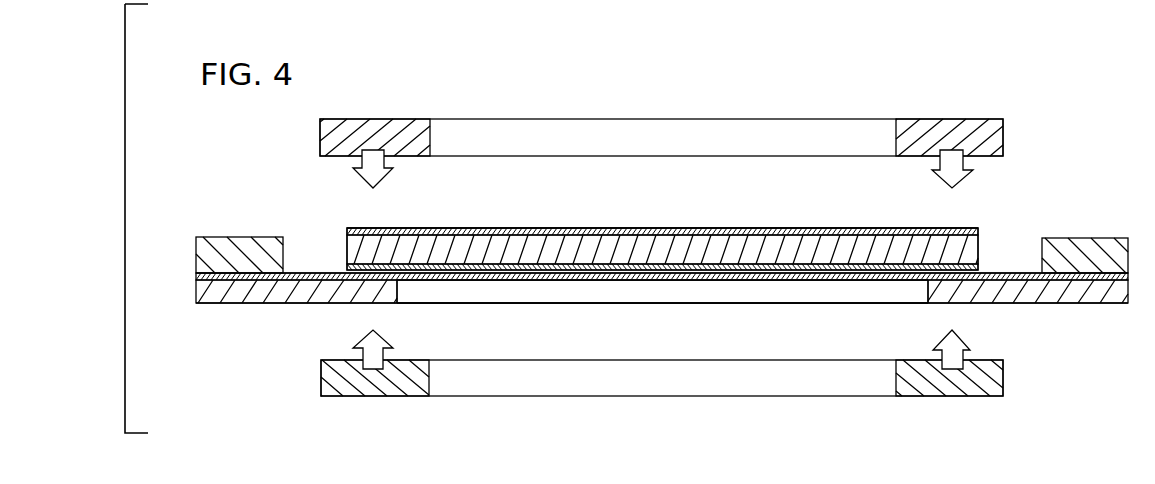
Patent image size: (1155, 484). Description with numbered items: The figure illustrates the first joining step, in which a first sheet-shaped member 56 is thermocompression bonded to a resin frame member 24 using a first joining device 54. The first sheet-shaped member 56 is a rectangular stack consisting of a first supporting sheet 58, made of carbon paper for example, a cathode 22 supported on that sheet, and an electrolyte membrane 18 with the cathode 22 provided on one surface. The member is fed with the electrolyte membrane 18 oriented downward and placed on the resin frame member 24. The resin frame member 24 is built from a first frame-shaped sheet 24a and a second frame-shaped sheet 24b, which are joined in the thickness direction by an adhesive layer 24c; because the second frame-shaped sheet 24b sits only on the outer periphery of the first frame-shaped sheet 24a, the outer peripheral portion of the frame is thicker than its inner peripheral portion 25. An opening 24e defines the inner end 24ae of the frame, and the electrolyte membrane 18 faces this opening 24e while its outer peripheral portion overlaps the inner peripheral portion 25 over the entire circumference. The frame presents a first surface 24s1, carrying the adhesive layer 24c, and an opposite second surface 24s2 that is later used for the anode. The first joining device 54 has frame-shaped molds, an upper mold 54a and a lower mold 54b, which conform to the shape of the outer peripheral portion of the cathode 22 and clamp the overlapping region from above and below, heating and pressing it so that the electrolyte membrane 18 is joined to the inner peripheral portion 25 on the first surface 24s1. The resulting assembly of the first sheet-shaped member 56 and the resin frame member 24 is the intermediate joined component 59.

The first joining device 54 is at (692, 132).
The upper mold 54a is at (943, 128).
The lower mold 54b is at (920, 387).
The resin frame member 24 is at (662, 266).
The first frame-shaped sheet 24a is at (228, 297).
The second frame-shaped sheet 24b is at (257, 256).
The adhesive layer 24c is at (309, 273).
The first surface 24s1 is at (329, 273).
The second surface 24s2 is at (300, 304).
The opening 24e is at (502, 292).
The inner end 24ae is at (928, 287).
The inner peripheral portion 25 is at (385, 290).
The intermediate joined component 59 is at (693, 222).
The first supporting sheet 58 is at (513, 229).
The first sheet-shaped member 56 is at (853, 226).
The cathode 22 is at (583, 248).
The electrolyte membrane 18 is at (748, 268).